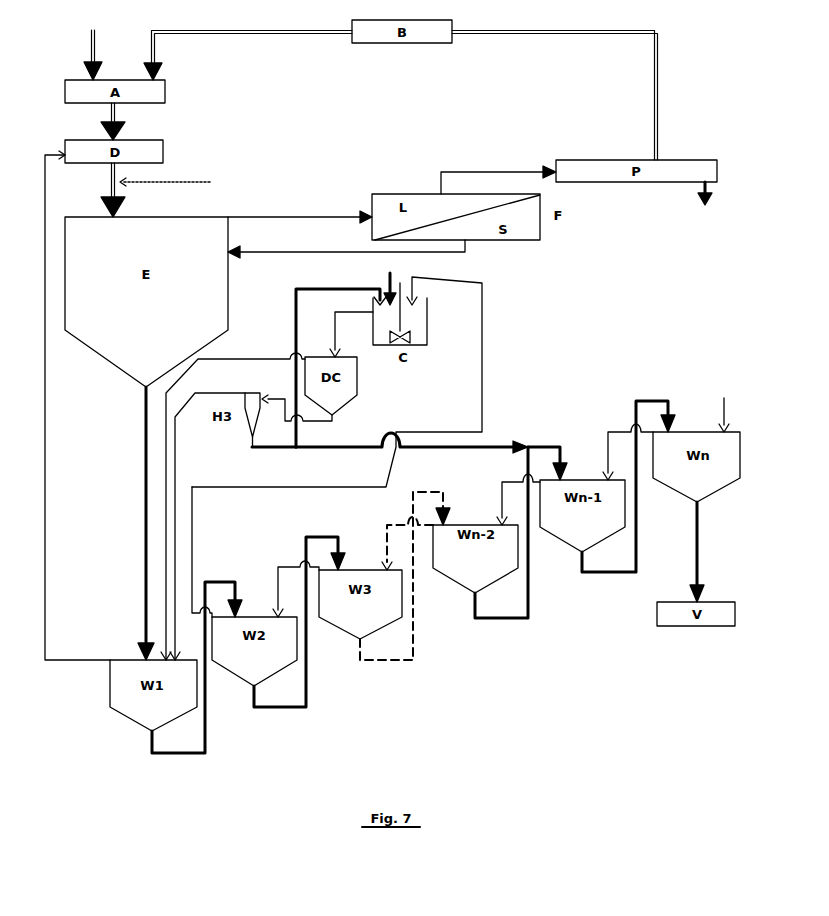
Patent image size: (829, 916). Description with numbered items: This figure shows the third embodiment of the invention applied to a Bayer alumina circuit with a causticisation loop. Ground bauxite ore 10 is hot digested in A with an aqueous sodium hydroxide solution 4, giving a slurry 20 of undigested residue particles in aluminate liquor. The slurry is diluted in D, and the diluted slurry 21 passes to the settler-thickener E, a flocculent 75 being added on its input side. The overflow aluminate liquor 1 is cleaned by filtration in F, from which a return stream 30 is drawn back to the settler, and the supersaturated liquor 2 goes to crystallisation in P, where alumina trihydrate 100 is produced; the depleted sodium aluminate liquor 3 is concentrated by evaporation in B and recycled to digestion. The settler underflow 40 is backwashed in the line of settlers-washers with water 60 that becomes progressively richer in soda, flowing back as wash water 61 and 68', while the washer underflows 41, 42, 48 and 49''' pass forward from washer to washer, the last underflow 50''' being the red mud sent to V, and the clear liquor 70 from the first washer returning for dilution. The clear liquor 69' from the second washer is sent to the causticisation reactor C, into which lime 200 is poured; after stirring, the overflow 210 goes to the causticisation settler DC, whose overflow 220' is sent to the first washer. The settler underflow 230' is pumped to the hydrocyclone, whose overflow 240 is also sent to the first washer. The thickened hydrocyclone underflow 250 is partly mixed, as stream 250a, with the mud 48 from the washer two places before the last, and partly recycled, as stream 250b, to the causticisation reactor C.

The ground bauxite ore 10 is at (93, 45).
The aqueous solution of sodium hydroxide 4 is at (248, 43).
The sodium aluminate liquor 3 is at (555, 83).
The slurry 20 is at (126, 121).
The slurry 21 is at (104, 190).
The flocculent 75 is at (177, 181).
The clear liquor 70 is at (65, 405).
The liquor 2 is at (498, 169).
The alumina trihydrate 100 is at (704, 201).
The aluminate liquor 1 is at (300, 206).
The separated solids return 30 is at (346, 258).
The underflow 40 is at (134, 523).
The lime 200 is at (377, 283).
The recycled hydrocyclone underflow 250b is at (320, 368).
The overflow 210 is at (339, 334).
The overflow 220' is at (233, 502).
The overflow 240 is at (207, 517).
The underflow 230' is at (312, 414).
The underflow 250 is at (270, 455).
The mixed hydrocyclone underflow 250a is at (412, 448).
The clear liquor from the second washer 69' is at (337, 447).
The underflow 41 is at (197, 682).
The underflow 42 is at (299, 635).
The wash water 68' is at (286, 582).
The underflow 48 is at (501, 545).
The underflow 49''' is at (628, 500).
The wash water 61 is at (624, 446).
The water 60 is at (727, 404).
The underflow 50''' is at (716, 552).